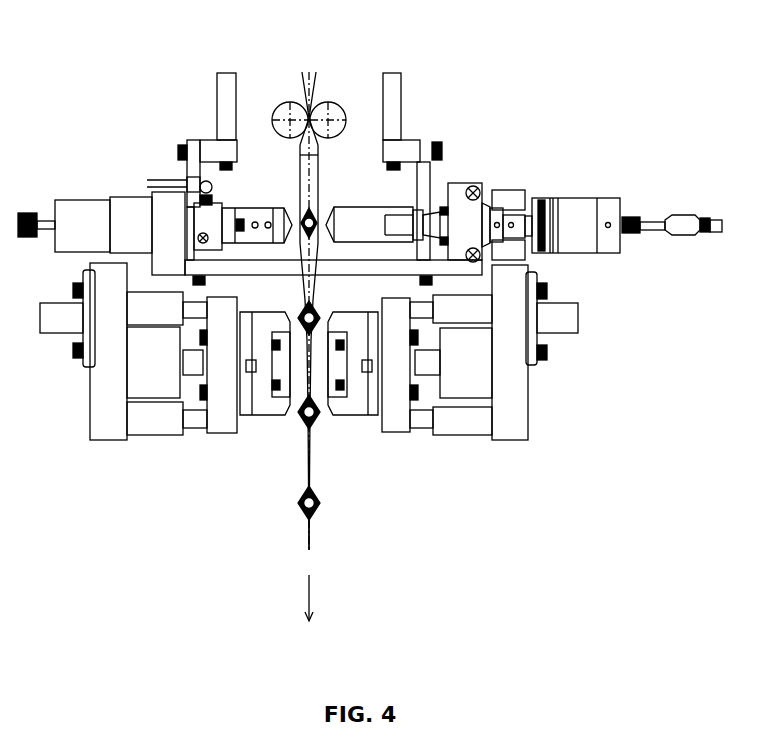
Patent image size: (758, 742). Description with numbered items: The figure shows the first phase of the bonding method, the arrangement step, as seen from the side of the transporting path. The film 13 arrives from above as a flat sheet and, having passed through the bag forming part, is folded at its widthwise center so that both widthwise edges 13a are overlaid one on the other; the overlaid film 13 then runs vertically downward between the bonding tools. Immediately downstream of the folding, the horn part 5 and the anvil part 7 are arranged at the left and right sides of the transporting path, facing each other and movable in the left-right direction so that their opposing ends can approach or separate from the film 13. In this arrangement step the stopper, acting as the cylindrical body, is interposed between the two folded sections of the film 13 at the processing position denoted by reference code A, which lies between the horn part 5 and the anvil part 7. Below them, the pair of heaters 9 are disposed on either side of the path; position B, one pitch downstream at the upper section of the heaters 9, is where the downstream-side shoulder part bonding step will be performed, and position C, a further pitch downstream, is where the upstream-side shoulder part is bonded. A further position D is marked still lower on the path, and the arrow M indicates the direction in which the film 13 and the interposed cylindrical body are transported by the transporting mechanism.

The film 13 is at (298, 162).
The widthwise edges 13a is at (300, 184).
The horn part 5 is at (338, 207).
The anvil part 7 is at (288, 245).
The pair of heaters 9 is at (285, 415).
The processing object position A is at (321, 253).
The position after single-pitch transport B is at (298, 340).
The position after second single-pitch transport C is at (320, 443).
The position D is at (298, 515).
The movement direction M is at (313, 593).